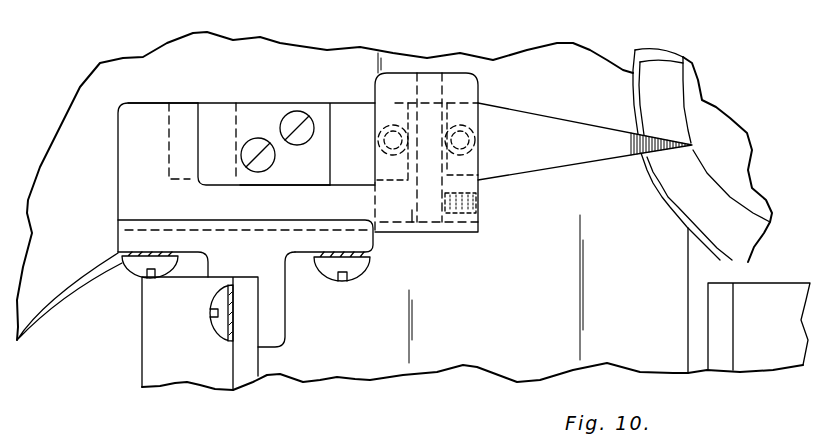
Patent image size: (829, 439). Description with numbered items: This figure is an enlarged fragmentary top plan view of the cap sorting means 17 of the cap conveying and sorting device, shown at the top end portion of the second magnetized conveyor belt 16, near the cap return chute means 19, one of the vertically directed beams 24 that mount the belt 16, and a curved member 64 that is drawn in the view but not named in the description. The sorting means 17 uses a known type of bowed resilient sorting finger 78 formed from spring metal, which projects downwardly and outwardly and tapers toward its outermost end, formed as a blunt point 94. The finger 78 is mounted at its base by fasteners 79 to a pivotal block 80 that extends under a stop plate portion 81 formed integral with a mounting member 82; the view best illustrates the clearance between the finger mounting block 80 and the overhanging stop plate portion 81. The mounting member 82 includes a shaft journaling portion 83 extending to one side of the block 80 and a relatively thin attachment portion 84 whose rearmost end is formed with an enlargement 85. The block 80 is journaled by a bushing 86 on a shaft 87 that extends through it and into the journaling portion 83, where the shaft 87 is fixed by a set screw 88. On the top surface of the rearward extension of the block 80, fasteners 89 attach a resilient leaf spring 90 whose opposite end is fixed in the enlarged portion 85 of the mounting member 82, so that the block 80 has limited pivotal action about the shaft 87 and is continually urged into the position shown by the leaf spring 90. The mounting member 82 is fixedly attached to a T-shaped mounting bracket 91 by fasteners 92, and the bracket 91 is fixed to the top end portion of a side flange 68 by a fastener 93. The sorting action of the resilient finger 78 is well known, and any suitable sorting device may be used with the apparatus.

The second magnetized conveyor belt 16 is at (503, 316).
The cap sorting means 17 is at (190, 78).
The cap return chute means 19 is at (50, 313).
The vertically directed beams 24 is at (143, 372).
The curved band 64 is at (628, 95).
The side flange 68 is at (260, 363).
The resilient sorting finger 78 is at (585, 168).
The fasteners 79 is at (387, 124).
The pivotal block 80 is at (357, 110).
The stop plate portion 81 is at (480, 90).
The mounting member 82 is at (282, 183).
The shaft journaling portion 83 is at (392, 235).
The attachment portion 84 is at (348, 193).
The enlargement 85 is at (133, 108).
The bushing 86 is at (478, 175).
The shaft 87 is at (412, 215).
The set screw 88 is at (460, 213).
The fasteners 89 is at (300, 109).
The resilient leaf spring 90 is at (220, 110).
The T-shaped mounting bracket 91 is at (285, 265).
The fasteners 92 is at (137, 278).
The fastener 93 is at (218, 342).
The blunt point 94 is at (695, 143).